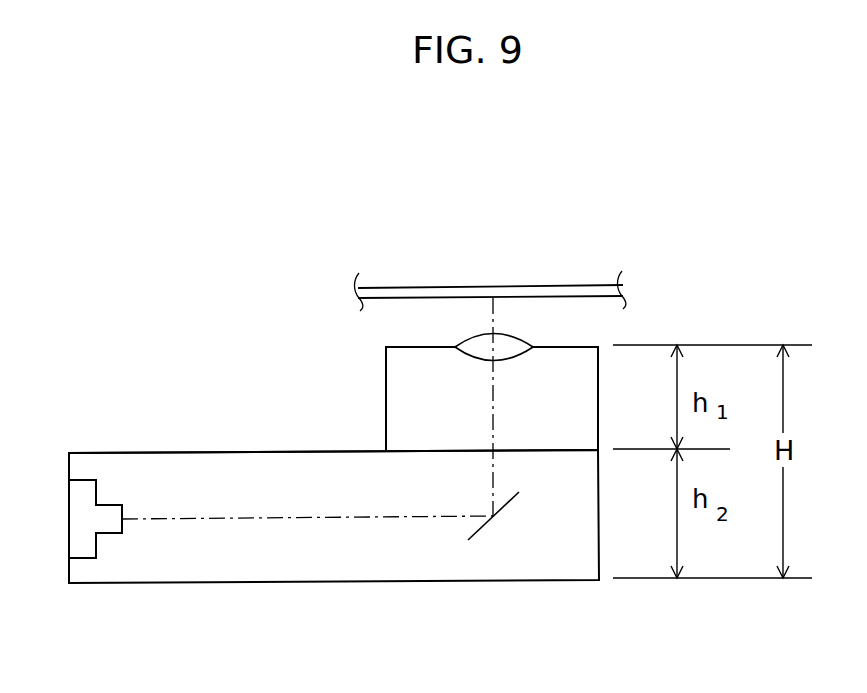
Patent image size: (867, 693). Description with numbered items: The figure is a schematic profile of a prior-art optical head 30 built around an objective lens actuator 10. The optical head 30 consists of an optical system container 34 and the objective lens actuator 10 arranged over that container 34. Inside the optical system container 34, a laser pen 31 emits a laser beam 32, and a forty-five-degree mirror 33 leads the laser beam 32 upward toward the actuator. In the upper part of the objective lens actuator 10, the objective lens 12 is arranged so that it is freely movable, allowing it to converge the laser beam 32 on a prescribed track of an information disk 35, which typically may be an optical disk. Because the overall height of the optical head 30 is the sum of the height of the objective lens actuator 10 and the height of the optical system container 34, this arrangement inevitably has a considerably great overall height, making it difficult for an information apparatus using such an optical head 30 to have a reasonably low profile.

The objective lens actuator 10 is at (386, 403).
The objective lens 12 is at (462, 356).
The optical head 30 is at (168, 318).
The laser pen 31 is at (113, 535).
The laser beam 32 is at (262, 521).
The 45-degree mirror 33 is at (485, 527).
The optical system container 34 is at (204, 451).
The information disk 35 is at (548, 287).